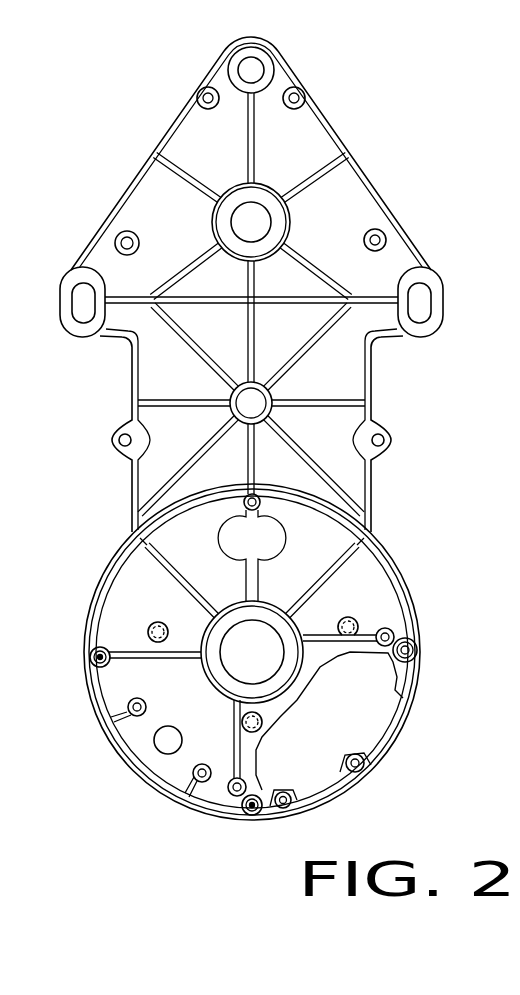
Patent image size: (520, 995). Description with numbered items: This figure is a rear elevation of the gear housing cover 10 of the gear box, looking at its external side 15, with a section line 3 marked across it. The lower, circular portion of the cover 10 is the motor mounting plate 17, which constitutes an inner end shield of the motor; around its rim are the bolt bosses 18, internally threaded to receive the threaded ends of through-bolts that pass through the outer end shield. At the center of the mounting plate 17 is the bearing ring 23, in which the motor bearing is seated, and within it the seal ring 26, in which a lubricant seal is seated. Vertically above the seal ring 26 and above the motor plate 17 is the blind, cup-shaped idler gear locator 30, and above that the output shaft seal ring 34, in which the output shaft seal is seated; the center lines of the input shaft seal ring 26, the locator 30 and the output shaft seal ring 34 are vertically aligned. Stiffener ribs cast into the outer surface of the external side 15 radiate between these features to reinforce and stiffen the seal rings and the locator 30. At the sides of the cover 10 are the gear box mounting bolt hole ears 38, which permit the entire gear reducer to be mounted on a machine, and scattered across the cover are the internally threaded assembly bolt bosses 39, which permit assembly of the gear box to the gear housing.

The section line 3- 3 is at (252, 36).
The gear housing cover 10 is at (131, 372).
The external side 15 is at (350, 487).
The motor mounting plate 17 is at (383, 766).
The bolt bosses 18 is at (259, 506).
The bearing ring 23 is at (272, 616).
The seal ring 26 is at (240, 663).
The idler gear locator 30 is at (266, 397).
The output shaft seal ring 34 is at (274, 216).
The gear box mounting bolt hole ears 38 is at (262, 44).
The assembly bolt bosses 39 is at (201, 90).